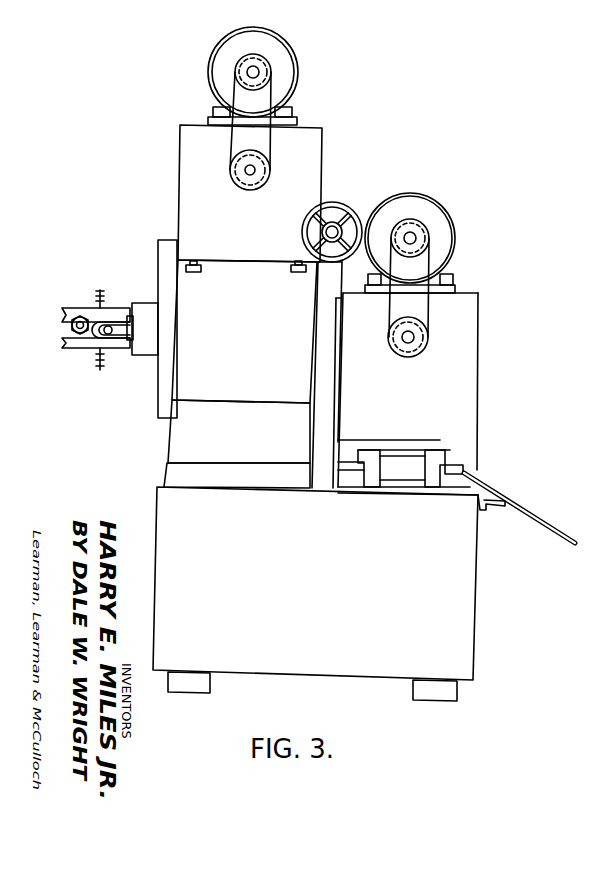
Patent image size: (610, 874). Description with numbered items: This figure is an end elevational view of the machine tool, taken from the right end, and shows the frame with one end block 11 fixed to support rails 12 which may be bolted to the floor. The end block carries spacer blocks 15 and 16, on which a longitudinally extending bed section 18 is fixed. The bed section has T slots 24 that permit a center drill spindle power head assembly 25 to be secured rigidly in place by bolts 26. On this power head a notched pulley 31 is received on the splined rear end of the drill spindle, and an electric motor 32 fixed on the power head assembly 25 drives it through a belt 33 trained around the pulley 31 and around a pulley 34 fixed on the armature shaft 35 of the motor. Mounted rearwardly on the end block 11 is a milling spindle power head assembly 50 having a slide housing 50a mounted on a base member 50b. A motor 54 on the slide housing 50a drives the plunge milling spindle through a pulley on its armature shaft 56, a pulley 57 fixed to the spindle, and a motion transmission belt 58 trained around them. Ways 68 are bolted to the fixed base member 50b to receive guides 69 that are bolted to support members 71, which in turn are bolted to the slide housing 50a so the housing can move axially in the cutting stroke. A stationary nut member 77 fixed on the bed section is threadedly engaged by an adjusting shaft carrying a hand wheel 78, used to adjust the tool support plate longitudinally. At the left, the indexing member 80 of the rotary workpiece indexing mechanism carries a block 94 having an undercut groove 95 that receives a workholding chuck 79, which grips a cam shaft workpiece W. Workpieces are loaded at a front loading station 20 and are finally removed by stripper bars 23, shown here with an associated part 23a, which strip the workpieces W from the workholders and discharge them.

The end block 11 is at (466, 617).
The support rails 12 is at (456, 692).
The spacer block 15 is at (198, 478).
The spacer block 16 is at (256, 440).
The bed section 18 is at (225, 360).
The front loading station 20 is at (60, 328).
The stripper bars 23 is at (534, 514).
The lever bracket 23a is at (495, 508).
The T slots 24 is at (199, 273).
The center drill spindle power head assembly 25 is at (312, 168).
The bolts 26 is at (298, 273).
The pulley 31 is at (247, 190).
The electric motor 32 is at (293, 70).
The belt 33 is at (270, 148).
The pulley 34 is at (236, 71).
The armature shaft 35 is at (258, 70).
The milling spindle power head assembly 50 is at (479, 383).
The slide housing 50a is at (463, 358).
The base member 50b is at (396, 488).
The motor 54 is at (444, 231).
The armature shaft 56 is at (414, 236).
The pulley 57 is at (428, 342).
The motion transmission belt 58 is at (431, 316).
The ways 68 is at (436, 462).
The guides 69 is at (464, 470).
The support members 71 is at (440, 448).
The stationary nut member 77 is at (322, 290).
The hand wheel 78 is at (338, 208).
The workholding chuck 79 is at (80, 350).
The indexing member 80 is at (160, 397).
The block 94 is at (146, 352).
The undercut groove 95 is at (147, 322).
The workpiece W is at (79, 318).